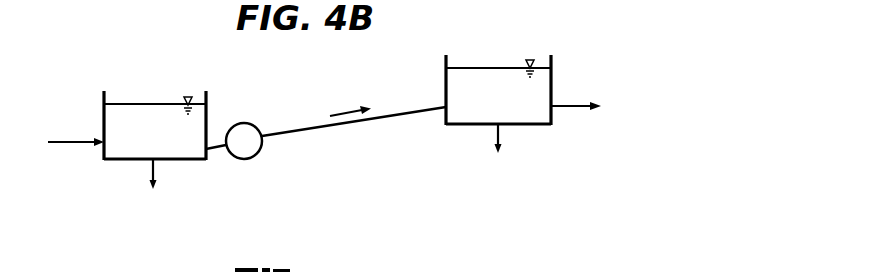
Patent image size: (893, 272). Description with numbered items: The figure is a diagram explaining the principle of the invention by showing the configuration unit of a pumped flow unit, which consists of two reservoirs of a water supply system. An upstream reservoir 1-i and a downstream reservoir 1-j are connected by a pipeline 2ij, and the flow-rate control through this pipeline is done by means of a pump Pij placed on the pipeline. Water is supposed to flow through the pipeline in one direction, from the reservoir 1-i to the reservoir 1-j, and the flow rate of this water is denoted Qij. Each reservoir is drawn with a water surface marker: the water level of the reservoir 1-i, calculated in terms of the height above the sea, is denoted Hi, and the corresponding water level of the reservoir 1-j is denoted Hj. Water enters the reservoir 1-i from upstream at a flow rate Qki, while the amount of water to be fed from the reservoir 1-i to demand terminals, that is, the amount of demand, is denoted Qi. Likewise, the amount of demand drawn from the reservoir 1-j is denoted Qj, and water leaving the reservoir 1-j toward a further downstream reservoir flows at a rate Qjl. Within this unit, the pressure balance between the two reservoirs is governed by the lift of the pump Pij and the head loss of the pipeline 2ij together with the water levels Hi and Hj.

The reservoir 1-i is at (207, 116).
The reservoir 1-j is at (446, 78).
The pipeline 2ij is at (323, 129).
The pump Pij is at (251, 157).
The water level of reservoir 1-i Hi is at (190, 92).
The water level of reservoir 1-j Hj is at (529, 56).
The flow rate from reservoir 1-k to reservoir 1-i Qki is at (76, 131).
The amount of demand at reservoir 1-i Qi is at (166, 178).
The flow rate from reservoir 1-i to reservoir 1-j Qij is at (349, 99).
The amount of demand at reservoir 1-j Qj is at (509, 145).
The flow rate from reservoir 1-j to reservoir 1-l Qjl is at (576, 96).